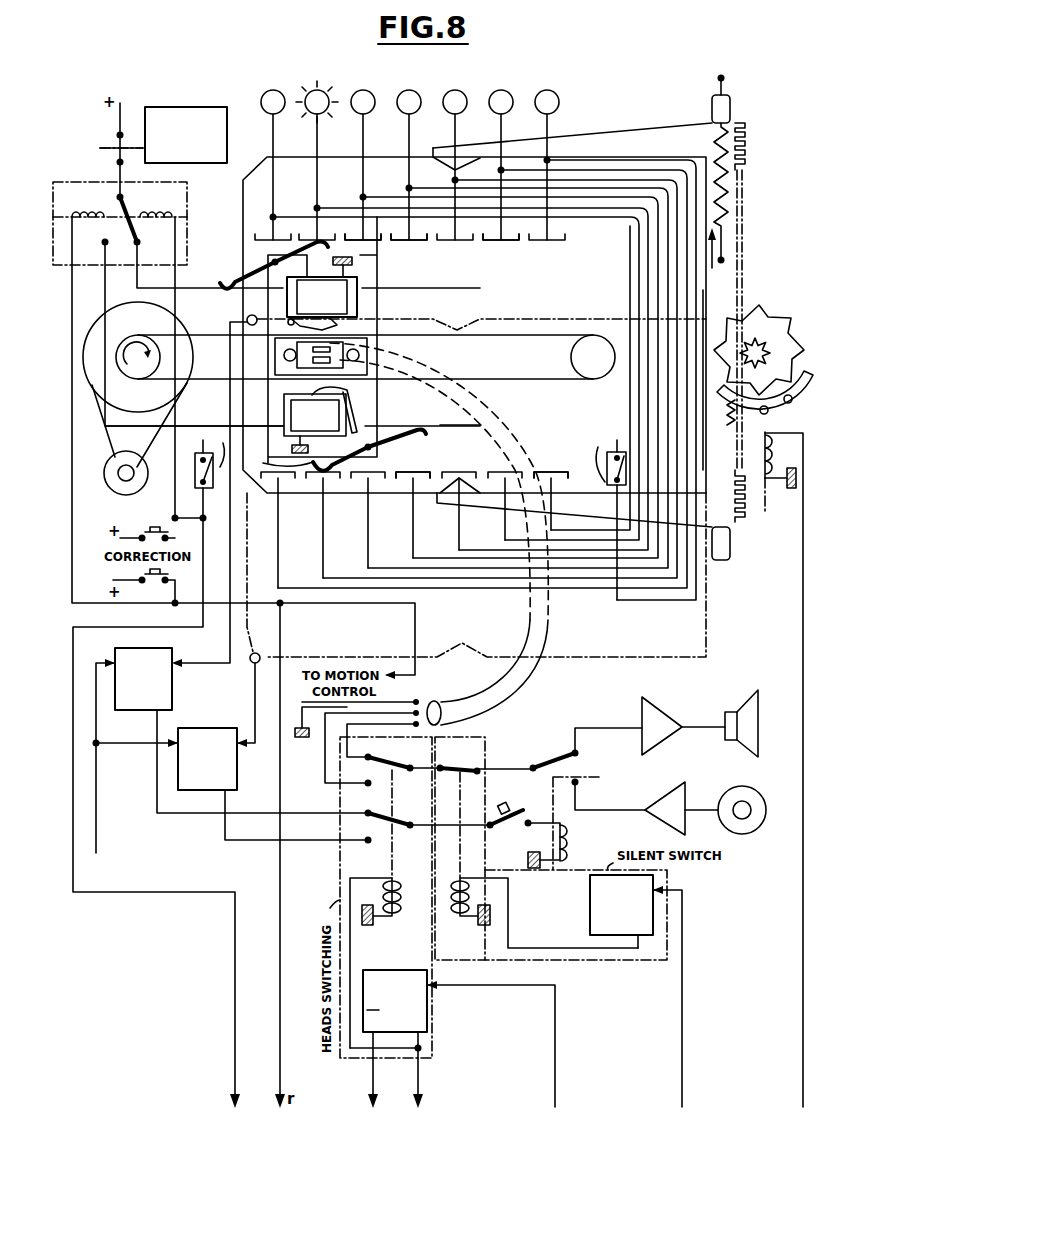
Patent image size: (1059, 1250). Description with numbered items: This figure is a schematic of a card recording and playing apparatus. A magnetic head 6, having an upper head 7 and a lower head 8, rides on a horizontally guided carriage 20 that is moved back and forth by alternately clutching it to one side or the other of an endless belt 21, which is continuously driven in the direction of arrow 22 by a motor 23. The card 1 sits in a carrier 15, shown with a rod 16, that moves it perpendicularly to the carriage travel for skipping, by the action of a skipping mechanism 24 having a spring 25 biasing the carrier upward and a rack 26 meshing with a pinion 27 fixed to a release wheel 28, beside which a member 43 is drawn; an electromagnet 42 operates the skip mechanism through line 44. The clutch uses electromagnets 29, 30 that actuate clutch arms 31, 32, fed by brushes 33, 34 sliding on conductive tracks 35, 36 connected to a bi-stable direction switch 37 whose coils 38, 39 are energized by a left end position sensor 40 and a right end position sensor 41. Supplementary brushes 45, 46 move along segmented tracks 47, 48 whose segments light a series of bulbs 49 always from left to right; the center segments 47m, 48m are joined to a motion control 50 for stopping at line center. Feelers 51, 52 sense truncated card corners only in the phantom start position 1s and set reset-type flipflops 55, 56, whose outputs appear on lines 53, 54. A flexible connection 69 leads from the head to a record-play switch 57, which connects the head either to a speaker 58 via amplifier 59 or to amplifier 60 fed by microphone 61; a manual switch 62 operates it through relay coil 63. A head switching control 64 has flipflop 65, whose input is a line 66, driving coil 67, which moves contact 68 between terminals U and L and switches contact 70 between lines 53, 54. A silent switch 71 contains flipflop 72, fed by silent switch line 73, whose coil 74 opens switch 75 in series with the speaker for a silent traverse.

The card 1 is at (243, 222).
The phantom line position 1s is at (554, 317).
The magnetic head 6 is at (243, 352).
The upper head 7 is at (353, 343).
The lower head 8 is at (300, 356).
The carrier 15 is at (723, 270).
The actuating rod 16 is at (712, 108).
The carriage 20 is at (370, 403).
The endless belt 21 is at (540, 380).
The arrow 22 is at (124, 342).
The motor 23 is at (118, 484).
The skipping mechanism 24 is at (768, 295).
The spring 25 is at (730, 202).
The rack 26 is at (745, 160).
The pinion 27 is at (764, 324).
The release wheel 28 is at (736, 330).
The electromagnet 29 is at (357, 300).
The electromagnet 30 is at (243, 420).
The clutch arm 31 is at (328, 326).
The clutch arm 32 is at (315, 423).
The brush 33 is at (238, 270).
The brush 34 is at (390, 440).
The conductive track 35 is at (440, 288).
The conductive track 36 is at (455, 425).
The direction switch 37 is at (187, 232).
The energizing coil 38 is at (173, 215).
The energizing coil 39 is at (98, 222).
The left end position sensor 40 is at (195, 470).
The right end position sensor 41 is at (609, 442).
The electromagnet 42 is at (771, 431).
The pawl 43 is at (800, 326).
The line 44 is at (795, 1058).
The supplementary brush 45 is at (372, 243).
The supplementary brush 46 is at (278, 459).
The segmented conductive track 47 is at (514, 246).
The center segment 47m is at (418, 243).
The segmented conductive track 48 is at (538, 458).
The center segment 48m is at (432, 472).
The bulbs 49 is at (266, 95).
The motion control 50 is at (186, 106).
The feeler 51 is at (248, 316).
The feeler 52 is at (252, 665).
The line 53 is at (312, 813).
The line 54 is at (313, 840).
The flipflop 55 is at (172, 682).
The flipflop 56 is at (205, 736).
The record-play switch 57 is at (556, 765).
The speaker 58 is at (745, 708).
The amplifier 59 is at (660, 716).
The amplifier 60 is at (668, 796).
The microphone 61 is at (728, 796).
The manual switch 62 is at (508, 805).
The relay coil 63 is at (567, 856).
The head switching control 64 is at (432, 1048).
The flipflop 65 is at (412, 1002).
The line 66 is at (555, 1060).
The coil 67 is at (398, 915).
The contact 68 is at (385, 763).
The cable 69 is at (518, 684).
The contact 70 is at (403, 812).
The silent switch 71 is at (600, 960).
The flipflop 72 is at (590, 900).
The silent switch line 73 is at (682, 1058).
The coil 74 is at (452, 916).
The switch 75 is at (453, 768).